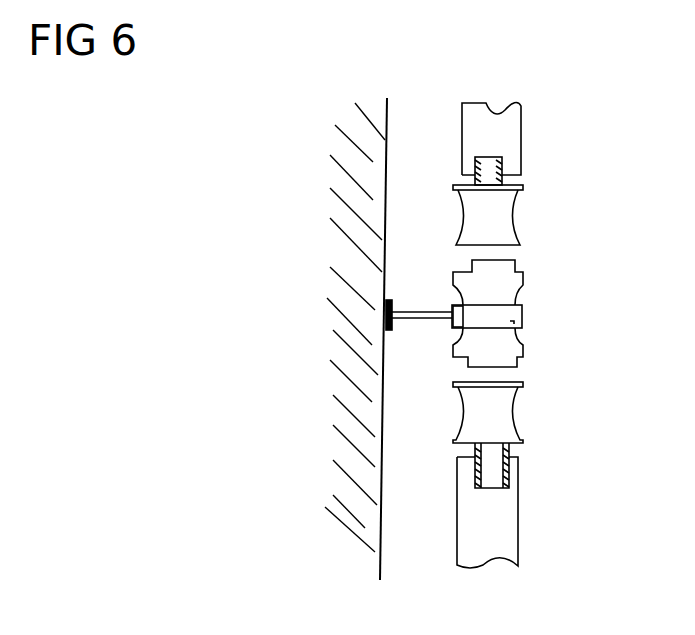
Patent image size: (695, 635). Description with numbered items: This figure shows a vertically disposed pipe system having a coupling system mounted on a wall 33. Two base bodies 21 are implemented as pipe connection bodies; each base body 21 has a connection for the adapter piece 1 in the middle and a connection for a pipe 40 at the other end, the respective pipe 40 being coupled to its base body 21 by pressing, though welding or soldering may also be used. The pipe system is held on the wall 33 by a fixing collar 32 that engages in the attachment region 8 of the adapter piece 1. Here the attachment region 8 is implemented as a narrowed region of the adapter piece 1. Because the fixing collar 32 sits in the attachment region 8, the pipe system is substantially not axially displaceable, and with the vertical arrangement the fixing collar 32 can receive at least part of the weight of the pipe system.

The adapter piece 1 is at (513, 283).
The attachment region 8 is at (543, 290).
The base body 21 is at (505, 212).
The fixing collar 32 is at (475, 317).
The wall 33 is at (340, 510).
The pipe 40 is at (511, 145).